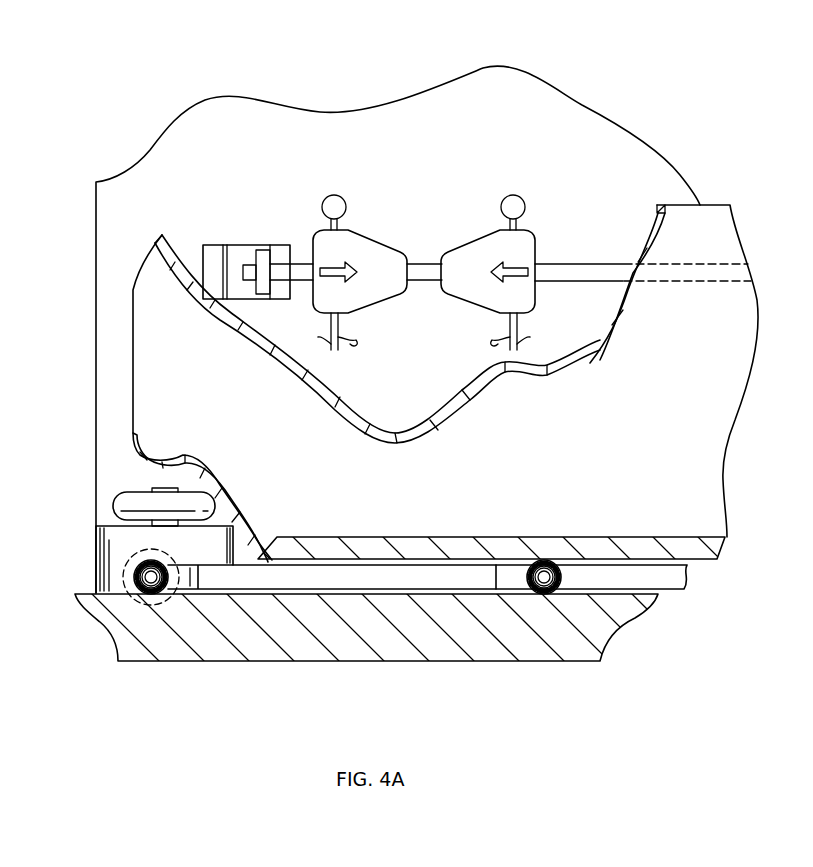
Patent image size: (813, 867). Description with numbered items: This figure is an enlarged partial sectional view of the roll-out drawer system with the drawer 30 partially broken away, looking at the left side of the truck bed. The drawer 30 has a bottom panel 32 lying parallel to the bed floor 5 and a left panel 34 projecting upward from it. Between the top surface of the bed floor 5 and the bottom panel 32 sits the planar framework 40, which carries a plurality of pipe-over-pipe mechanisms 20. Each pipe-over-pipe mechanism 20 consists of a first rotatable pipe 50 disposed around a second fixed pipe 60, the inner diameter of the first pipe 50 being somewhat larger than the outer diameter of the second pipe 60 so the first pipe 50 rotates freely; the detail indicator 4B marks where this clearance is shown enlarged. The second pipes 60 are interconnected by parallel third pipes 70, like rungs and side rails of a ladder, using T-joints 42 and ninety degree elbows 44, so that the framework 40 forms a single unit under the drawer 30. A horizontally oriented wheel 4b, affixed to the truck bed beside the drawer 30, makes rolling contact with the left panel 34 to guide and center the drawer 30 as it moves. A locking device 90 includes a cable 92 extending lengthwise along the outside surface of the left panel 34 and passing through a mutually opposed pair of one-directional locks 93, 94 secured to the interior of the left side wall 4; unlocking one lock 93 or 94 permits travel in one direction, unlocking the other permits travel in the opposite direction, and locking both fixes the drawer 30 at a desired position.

The left side wall 4 is at (580, 112).
The horizontal wheel 4b is at (120, 503).
The detail view indicator 4B is at (105, 618).
The bed floor 5 is at (500, 652).
The pipe-over-pipe mechanism 20 is at (146, 628).
The drawer 30 is at (150, 325).
The bottom panel 32 is at (683, 547).
The left panel 34 is at (703, 445).
The planar framework 40 is at (347, 600).
The T-joint 42 is at (573, 580).
The 90 degree elbow 44 is at (188, 583).
The first pipe 50 is at (565, 538).
The second pipe 60 is at (518, 563).
The third pipe 70 is at (428, 575).
The locking device 90 is at (420, 210).
The cable 92 is at (558, 268).
The one-directional lock 93 is at (363, 250).
The one-directional lock 94 is at (485, 248).